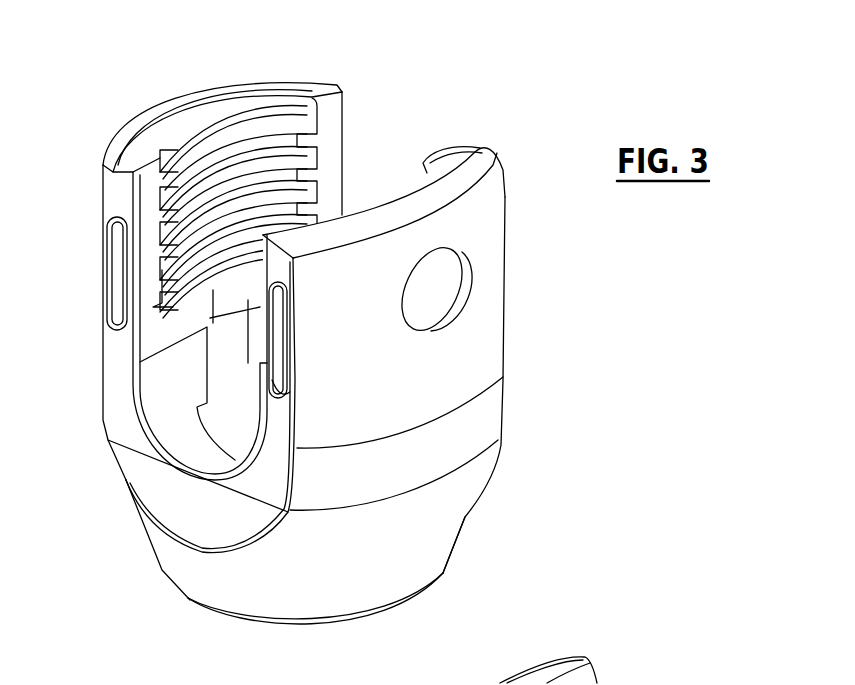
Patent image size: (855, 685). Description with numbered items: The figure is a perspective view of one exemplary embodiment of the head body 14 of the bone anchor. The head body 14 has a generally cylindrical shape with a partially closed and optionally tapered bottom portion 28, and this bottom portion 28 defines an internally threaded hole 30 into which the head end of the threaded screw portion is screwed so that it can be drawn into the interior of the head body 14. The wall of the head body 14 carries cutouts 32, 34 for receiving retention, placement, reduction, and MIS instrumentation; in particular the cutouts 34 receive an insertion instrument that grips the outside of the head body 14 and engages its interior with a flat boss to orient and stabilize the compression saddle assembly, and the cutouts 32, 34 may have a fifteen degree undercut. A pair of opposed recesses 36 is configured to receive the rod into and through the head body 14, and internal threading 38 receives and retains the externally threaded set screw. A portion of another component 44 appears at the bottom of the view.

The head body 14 is at (505, 257).
The bottom portion 28 is at (190, 598).
The internally threaded hole 30 is at (357, 627).
The cutouts 32 is at (278, 372).
The cutouts 34 is at (437, 325).
The opposed recesses 36 is at (393, 157).
The internal threading 38 is at (262, 133).
The screw head / saddle member 44 is at (595, 682).